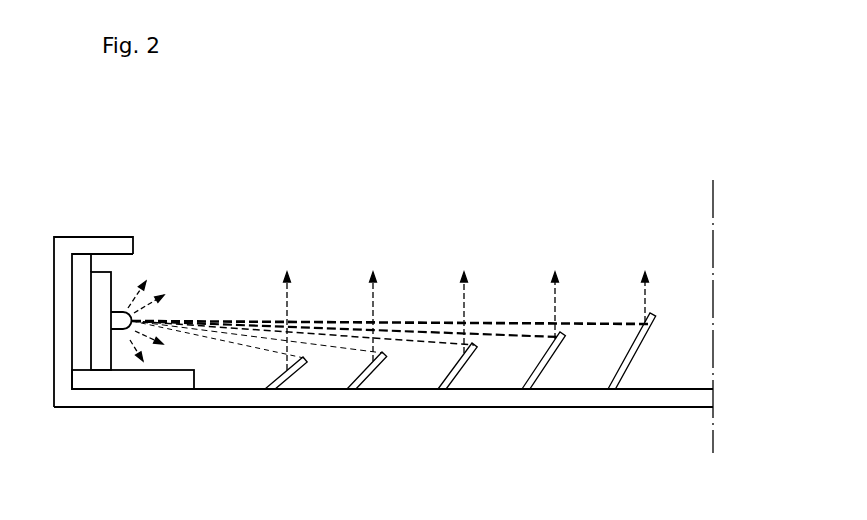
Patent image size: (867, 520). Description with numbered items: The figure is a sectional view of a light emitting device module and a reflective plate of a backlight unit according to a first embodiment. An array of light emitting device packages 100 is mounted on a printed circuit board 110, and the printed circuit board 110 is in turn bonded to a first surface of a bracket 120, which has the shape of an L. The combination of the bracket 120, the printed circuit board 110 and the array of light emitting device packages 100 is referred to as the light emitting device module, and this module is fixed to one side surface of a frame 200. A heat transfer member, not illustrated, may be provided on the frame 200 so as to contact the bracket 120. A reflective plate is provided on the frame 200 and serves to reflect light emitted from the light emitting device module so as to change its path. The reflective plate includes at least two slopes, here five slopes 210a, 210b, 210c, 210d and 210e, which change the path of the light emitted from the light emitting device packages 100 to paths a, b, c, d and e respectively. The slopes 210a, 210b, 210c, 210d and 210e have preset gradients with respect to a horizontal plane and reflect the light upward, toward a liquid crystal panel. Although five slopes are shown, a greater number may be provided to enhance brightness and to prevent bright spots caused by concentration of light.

The frame 200 is at (71, 243).
The light emitting device package 100 is at (120, 308).
The printed circuit board 110 is at (99, 362).
The bracket 120 is at (172, 382).
The slope 210a is at (291, 375).
The slope 210b is at (373, 372).
The slope 210c is at (462, 368).
The slope 210d is at (548, 362).
The slope 210e is at (638, 360).